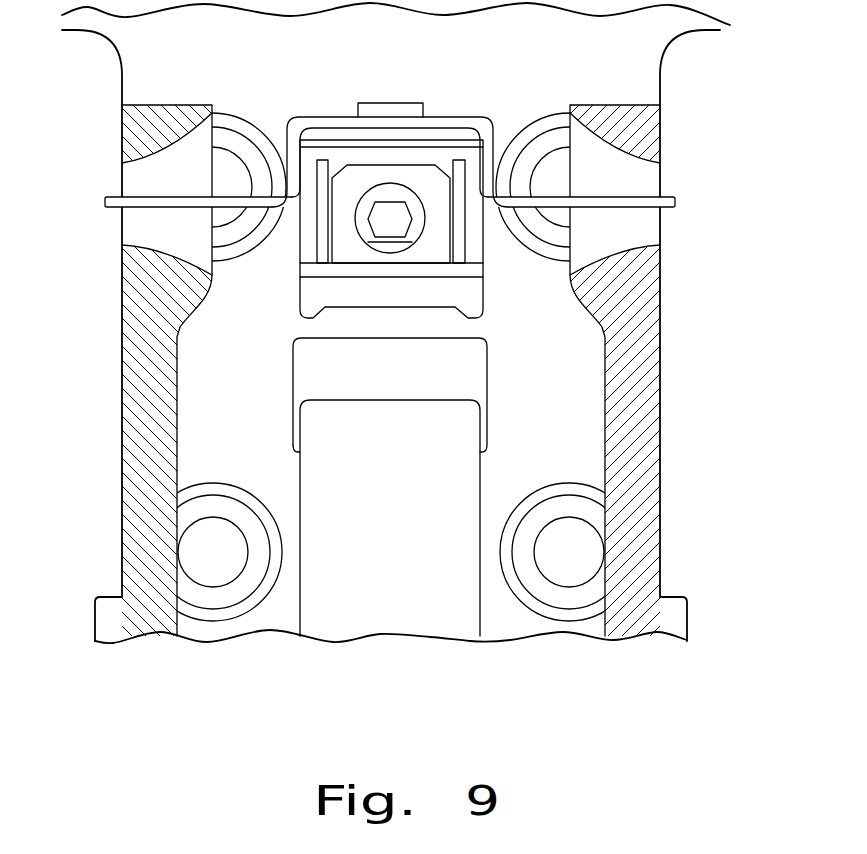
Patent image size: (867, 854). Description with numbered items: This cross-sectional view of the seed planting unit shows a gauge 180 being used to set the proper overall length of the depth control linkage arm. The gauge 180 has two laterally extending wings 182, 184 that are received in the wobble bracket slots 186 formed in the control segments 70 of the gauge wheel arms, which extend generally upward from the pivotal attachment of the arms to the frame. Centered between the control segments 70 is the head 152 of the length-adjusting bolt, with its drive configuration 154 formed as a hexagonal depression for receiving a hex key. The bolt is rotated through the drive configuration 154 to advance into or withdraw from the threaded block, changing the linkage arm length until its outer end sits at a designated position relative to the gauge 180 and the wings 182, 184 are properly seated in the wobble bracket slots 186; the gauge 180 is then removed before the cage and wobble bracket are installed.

The control segment 70 is at (142, 432).
The head 152 is at (413, 205).
The drive configuration 154 is at (388, 216).
The gauge 180 is at (290, 99).
The wing 182 is at (113, 205).
The wing 184 is at (675, 207).
The wobble bracket slot 186 is at (130, 180).